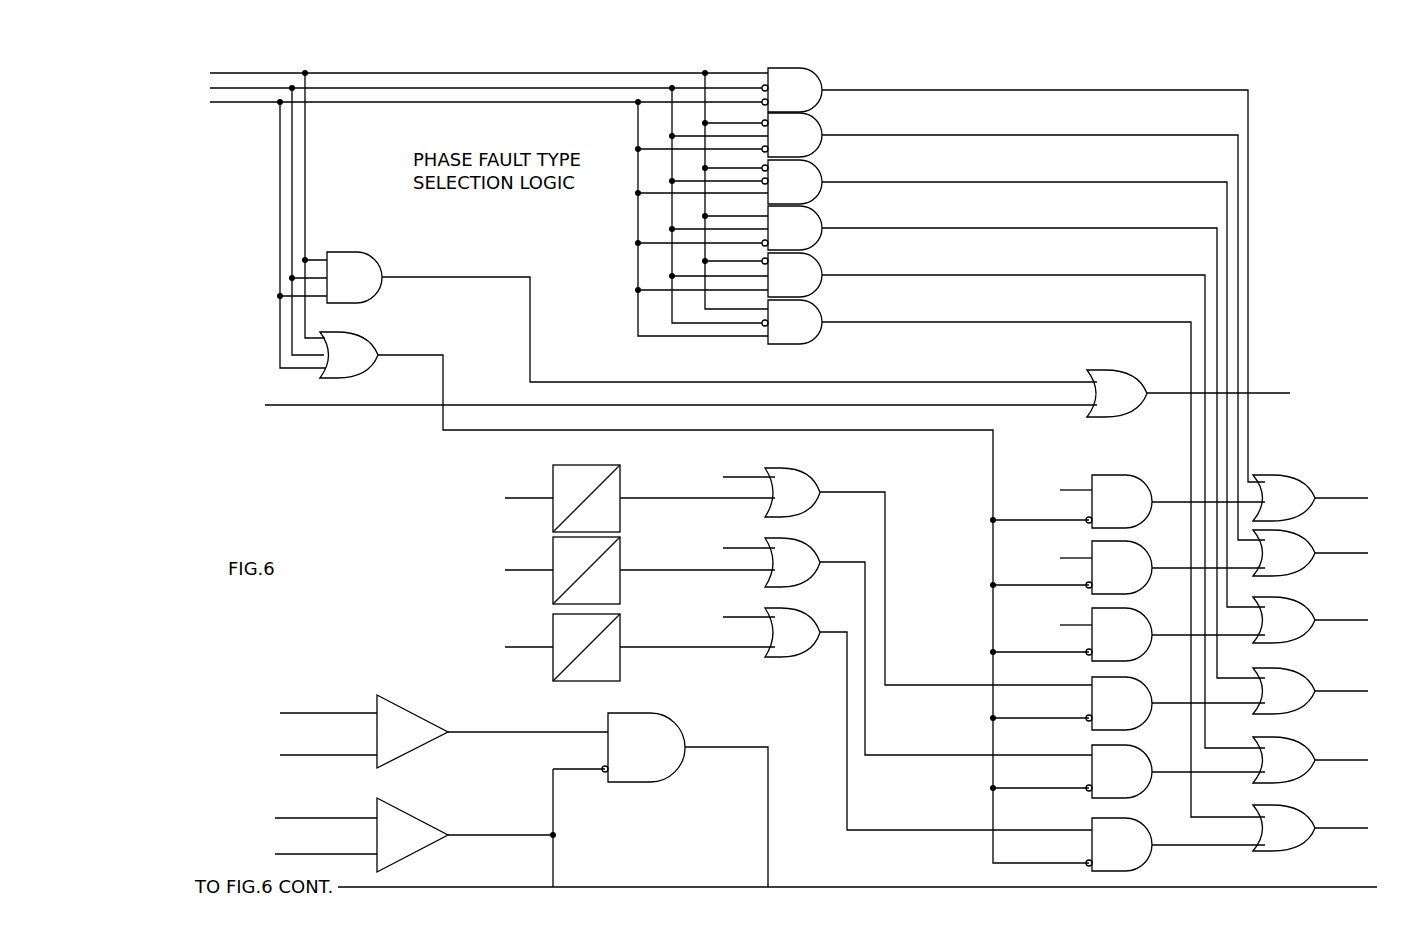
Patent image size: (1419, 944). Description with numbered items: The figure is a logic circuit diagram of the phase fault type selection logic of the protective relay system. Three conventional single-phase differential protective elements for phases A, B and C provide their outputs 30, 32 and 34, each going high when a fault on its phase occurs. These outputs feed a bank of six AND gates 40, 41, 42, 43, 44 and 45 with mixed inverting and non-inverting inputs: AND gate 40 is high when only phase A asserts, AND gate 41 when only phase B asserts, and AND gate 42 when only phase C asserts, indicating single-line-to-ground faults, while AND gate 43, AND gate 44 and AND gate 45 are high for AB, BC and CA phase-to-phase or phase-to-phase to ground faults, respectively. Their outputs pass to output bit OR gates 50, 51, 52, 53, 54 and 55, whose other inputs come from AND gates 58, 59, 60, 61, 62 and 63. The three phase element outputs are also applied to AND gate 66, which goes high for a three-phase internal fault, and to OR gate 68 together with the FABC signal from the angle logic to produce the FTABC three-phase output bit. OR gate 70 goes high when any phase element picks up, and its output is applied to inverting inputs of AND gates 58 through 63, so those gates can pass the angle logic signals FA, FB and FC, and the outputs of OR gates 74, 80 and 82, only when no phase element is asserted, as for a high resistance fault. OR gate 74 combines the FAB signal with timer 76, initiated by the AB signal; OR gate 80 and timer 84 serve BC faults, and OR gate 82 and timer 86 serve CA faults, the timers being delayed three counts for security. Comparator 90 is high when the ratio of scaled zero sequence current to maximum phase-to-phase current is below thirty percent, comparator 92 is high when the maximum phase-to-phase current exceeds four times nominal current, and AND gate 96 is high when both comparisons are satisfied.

The phase A element output 30 is at (228, 72).
The phase B element output 32 is at (267, 87).
The phase C element output 34 is at (245, 103).
The AND gate 40 is at (816, 74).
The AND gate 41 is at (818, 121).
The AND gate 42 is at (818, 167).
The AND gate 43 is at (818, 214).
The AND gate 44 is at (818, 260).
The AND gate 45 is at (818, 307).
The output bit OR gate 50 is at (1296, 474).
The output bit OR gate 51 is at (1305, 532).
The output bit OR gate 52 is at (1305, 598).
The output bit OR gate 53 is at (1305, 668).
The output bit OR gate 54 is at (1305, 737).
The output bit OR gate 55 is at (1305, 806).
The AND gate 58 is at (1115, 475).
The AND gate 59 is at (1145, 549).
The AND gate 60 is at (1145, 615).
The AND gate 61 is at (1145, 680).
The AND gate 62 is at (1145, 750).
The AND gate 63 is at (1145, 820).
The AND gate 66 is at (345, 252).
The OR gate 68 is at (1106, 418).
The OR gate 70 is at (370, 333).
The OR gate 74 is at (820, 478).
The timer 76 is at (553, 478).
The OR gate 80 is at (820, 548).
The OR gate 82 is at (820, 616).
The timer 84 is at (553, 550).
The timer 86 is at (553, 628).
The comparator 90 is at (410, 705).
The comparator 92 is at (410, 806).
The AND gate 96 is at (670, 723).